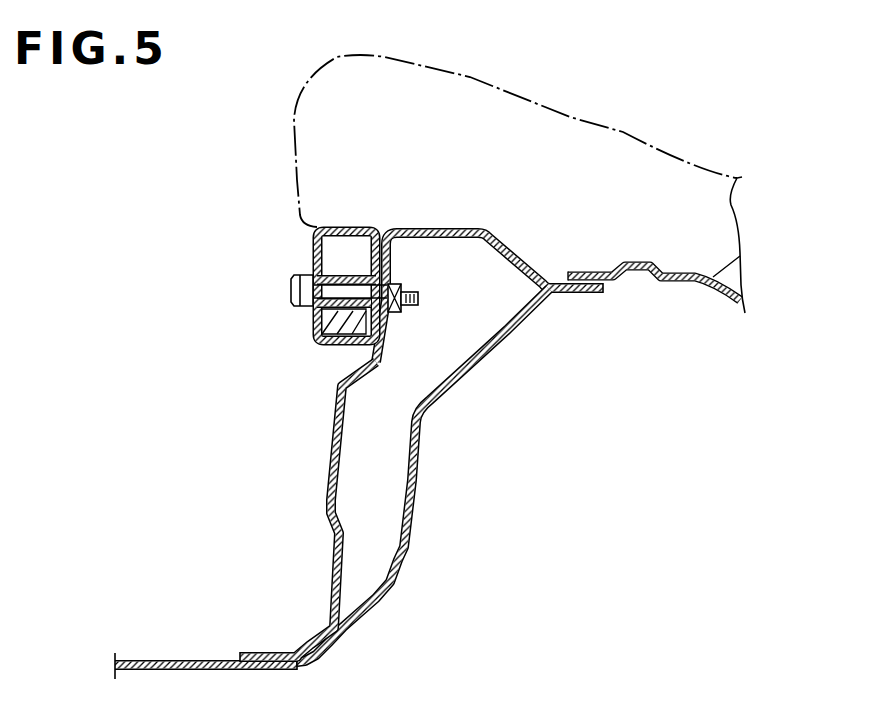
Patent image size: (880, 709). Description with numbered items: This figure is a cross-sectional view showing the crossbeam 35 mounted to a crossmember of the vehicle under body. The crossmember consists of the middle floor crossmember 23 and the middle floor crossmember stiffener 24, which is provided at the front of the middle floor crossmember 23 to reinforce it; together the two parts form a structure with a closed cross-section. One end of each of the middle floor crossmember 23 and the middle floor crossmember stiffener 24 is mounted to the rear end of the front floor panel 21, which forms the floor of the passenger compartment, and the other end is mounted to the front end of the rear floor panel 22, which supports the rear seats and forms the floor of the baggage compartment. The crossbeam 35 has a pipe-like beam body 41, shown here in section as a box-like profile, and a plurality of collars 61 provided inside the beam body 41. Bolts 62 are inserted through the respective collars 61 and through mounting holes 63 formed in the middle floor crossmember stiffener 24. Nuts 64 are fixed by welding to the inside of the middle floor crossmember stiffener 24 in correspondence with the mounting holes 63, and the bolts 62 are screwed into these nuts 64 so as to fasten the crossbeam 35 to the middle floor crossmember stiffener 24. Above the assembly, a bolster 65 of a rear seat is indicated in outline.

The front floor panel 21 is at (135, 655).
The rear floor panel 22 is at (741, 255).
The middle floor crossmember 23 is at (433, 403).
The middle floor crossmember stiffener 24 is at (330, 497).
The crossbeam 35 is at (300, 242).
The beam body 41 is at (315, 324).
The collar 61 is at (322, 338).
The bolt 62 is at (290, 288).
The mounting hole 63 is at (337, 343).
The nut 64 is at (397, 317).
The bolster 65 is at (623, 132).